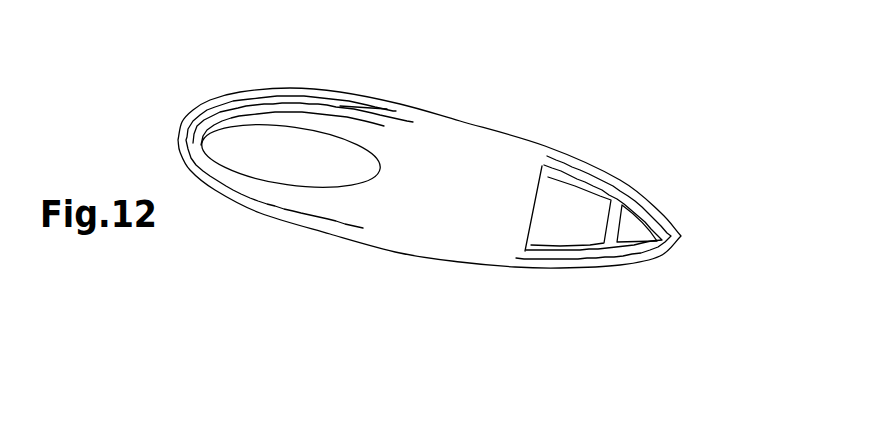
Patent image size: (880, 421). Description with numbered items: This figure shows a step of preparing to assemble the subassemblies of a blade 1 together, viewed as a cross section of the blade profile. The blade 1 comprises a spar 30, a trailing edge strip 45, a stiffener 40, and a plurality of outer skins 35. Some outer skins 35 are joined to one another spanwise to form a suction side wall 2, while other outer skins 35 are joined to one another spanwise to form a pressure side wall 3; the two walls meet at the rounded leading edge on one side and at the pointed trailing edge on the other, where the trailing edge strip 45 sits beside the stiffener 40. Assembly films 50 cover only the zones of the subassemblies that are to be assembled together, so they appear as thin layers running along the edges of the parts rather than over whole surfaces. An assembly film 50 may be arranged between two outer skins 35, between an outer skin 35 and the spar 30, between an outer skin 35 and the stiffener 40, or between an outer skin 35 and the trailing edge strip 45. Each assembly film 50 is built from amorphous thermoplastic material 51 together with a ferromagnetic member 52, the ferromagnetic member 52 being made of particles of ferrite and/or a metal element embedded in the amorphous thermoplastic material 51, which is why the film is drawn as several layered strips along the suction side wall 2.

The blade 1 is at (725, 248).
The suction side wall 2 is at (537, 117).
The pressure side wall 3 is at (478, 288).
The spar 30 is at (263, 165).
The outer skin 35 is at (507, 134).
The stiffener 40 is at (550, 198).
The trailing edge strip 45 is at (635, 225).
The assembly film 50 is at (396, 131).
The amorphous thermoplastic material 51 is at (220, 103).
The ferromagnetic member 52 is at (277, 104).